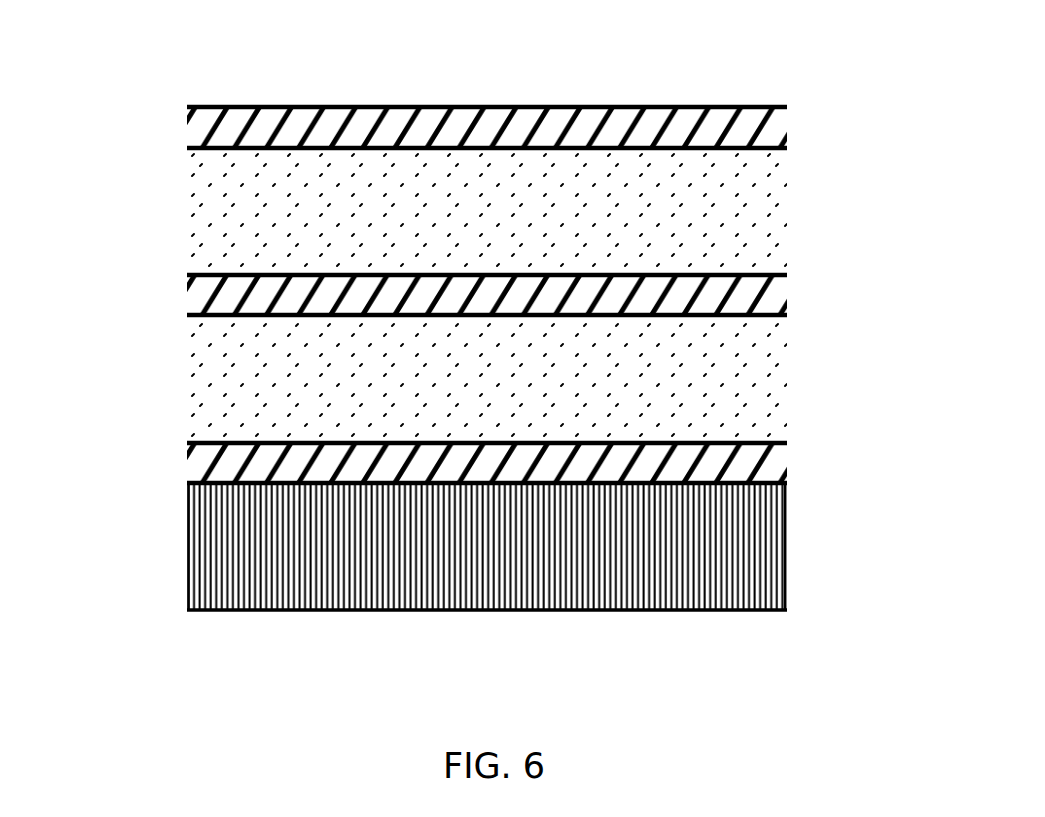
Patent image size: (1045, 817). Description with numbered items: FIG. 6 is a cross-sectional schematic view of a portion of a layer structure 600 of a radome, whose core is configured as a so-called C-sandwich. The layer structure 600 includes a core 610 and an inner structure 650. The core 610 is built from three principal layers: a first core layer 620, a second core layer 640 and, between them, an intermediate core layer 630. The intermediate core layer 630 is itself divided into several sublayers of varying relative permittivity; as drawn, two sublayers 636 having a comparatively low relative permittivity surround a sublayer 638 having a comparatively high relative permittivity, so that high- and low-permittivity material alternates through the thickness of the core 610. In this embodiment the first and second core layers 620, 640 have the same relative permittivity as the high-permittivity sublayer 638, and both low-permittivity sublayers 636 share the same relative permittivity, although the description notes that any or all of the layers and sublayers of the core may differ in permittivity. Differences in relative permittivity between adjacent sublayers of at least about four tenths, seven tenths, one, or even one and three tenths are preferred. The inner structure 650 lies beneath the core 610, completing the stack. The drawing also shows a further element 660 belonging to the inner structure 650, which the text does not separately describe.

The layer structure 600 is at (815, 72).
The core 610 is at (805, 107).
The first core layer 620 is at (585, 130).
The intermediate core layer 630 is at (142, 150).
The sublayers 636 is at (461, 182).
The sublayer 638 is at (189, 297).
The second core layer 640 is at (200, 466).
The inner structure 650 is at (805, 487).
The substrate 660 is at (597, 570).